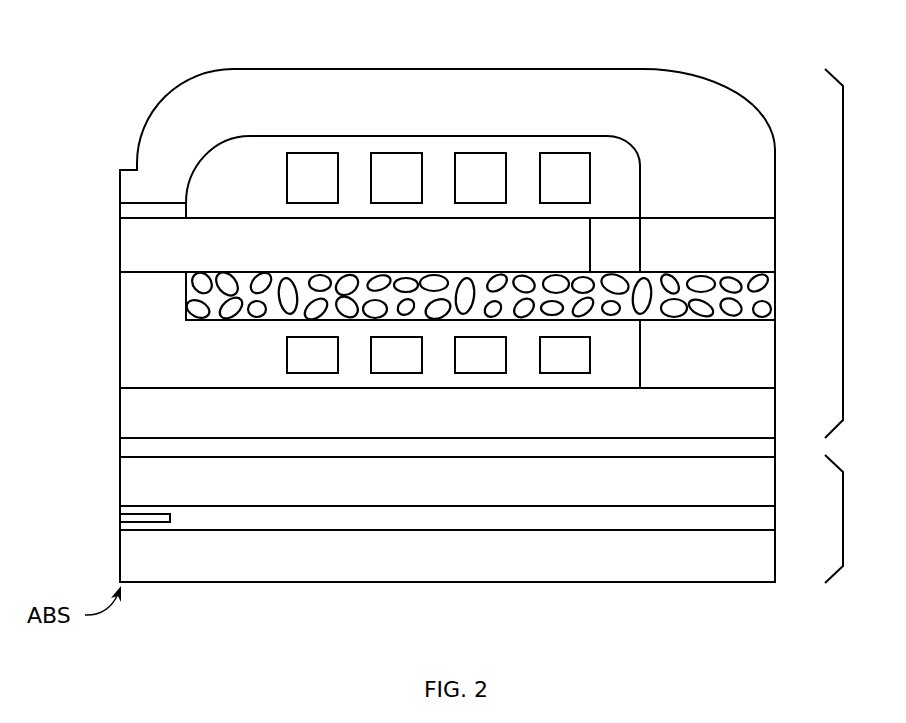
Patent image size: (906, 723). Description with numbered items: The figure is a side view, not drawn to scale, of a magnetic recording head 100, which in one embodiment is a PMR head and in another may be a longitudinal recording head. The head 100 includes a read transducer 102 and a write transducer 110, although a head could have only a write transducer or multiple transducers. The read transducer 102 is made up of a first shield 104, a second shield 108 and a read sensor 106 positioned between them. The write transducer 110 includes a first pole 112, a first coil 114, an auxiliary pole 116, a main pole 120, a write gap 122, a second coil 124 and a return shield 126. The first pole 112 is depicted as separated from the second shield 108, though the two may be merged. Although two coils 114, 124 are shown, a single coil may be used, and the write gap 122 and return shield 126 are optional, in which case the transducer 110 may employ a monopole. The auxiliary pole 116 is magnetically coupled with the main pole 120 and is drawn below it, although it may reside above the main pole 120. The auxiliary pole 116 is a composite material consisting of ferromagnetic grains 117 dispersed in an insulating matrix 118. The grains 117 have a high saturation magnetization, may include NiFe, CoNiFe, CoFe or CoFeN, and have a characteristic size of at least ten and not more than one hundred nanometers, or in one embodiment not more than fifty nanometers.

The magnetic recording head 100 is at (433, 28).
The read transducer 102 is at (843, 518).
The shield 104 is at (775, 568).
The read sensor 106 is at (120, 517).
The shield 108 is at (120, 465).
The write transducer 110 is at (843, 253).
The first pole 112 is at (120, 425).
The first coil 114 is at (258, 351).
The auxiliary pole 116 is at (775, 310).
The grains 117 is at (186, 290).
The insulating matrix 118 is at (792, 285).
The main pole 120 is at (592, 253).
The write gap 122 is at (120, 218).
The second coil 124 is at (614, 186).
The shield 126 is at (137, 163).